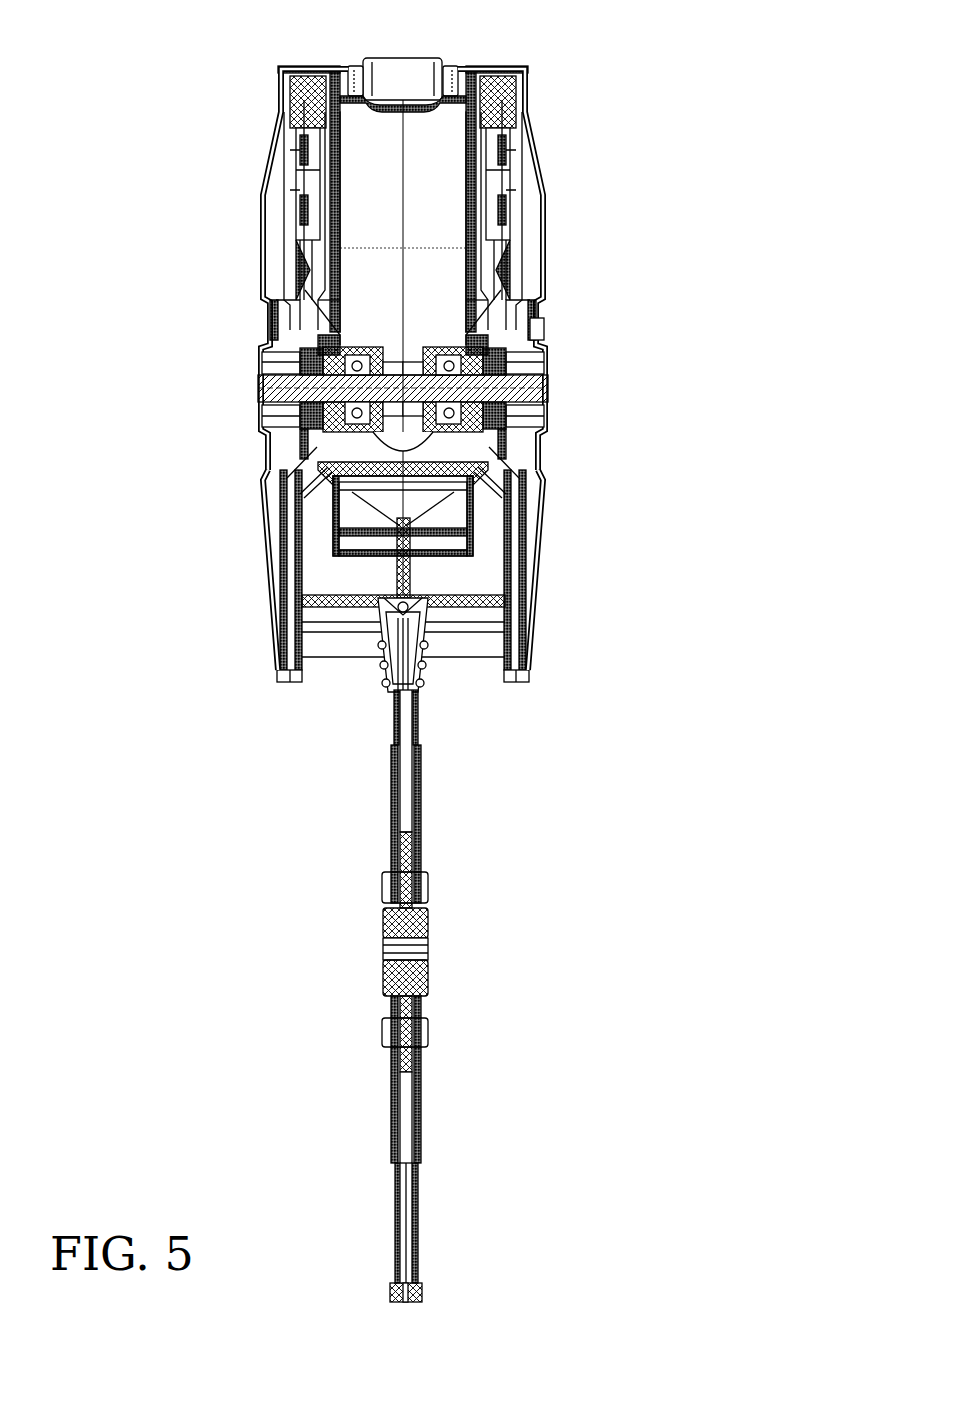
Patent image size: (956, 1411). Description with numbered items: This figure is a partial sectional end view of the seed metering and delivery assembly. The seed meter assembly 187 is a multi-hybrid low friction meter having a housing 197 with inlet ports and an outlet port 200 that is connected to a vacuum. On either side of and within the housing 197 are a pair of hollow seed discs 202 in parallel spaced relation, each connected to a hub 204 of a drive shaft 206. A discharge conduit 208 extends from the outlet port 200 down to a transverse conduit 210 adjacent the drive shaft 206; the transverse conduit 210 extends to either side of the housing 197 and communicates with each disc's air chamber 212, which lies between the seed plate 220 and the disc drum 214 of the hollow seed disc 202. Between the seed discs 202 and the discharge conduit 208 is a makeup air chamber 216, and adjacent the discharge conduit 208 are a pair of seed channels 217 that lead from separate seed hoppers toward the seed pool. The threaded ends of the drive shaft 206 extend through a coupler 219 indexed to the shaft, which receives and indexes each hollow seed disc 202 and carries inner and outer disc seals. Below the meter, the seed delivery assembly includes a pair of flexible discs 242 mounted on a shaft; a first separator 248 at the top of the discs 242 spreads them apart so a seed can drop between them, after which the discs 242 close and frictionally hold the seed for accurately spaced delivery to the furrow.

The seed meter assembly 187 is at (746, 155).
The housing 197 is at (334, 597).
The outlet port 200 is at (402, 105).
The hollow seed disc 202 is at (256, 232).
The hub 204 is at (260, 372).
The drive shaft 206 is at (259, 389).
The discharge conduit 208 is at (365, 147).
The transverse conduit 210 is at (455, 445).
The air chamber 212 is at (275, 588).
The disc drum 214 is at (263, 252).
The makeup air chamber 216 is at (303, 163).
The seed channel 217 is at (259, 418).
The coupler 219 is at (545, 337).
The seed plate 220 is at (298, 548).
The flexible disc 242 is at (392, 833).
The first separator 248 is at (420, 705).